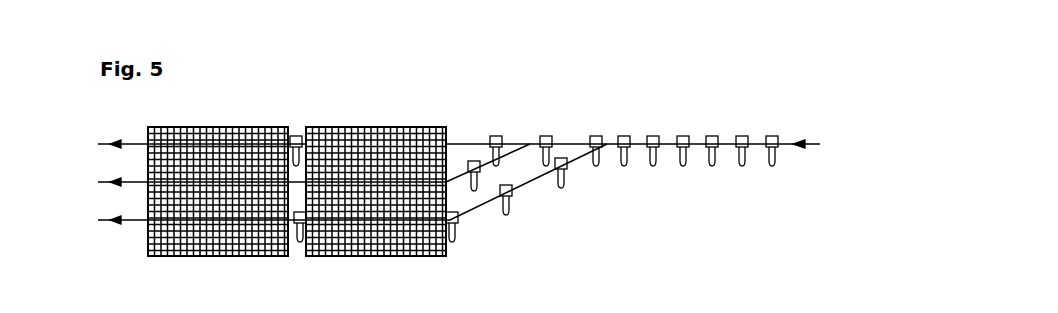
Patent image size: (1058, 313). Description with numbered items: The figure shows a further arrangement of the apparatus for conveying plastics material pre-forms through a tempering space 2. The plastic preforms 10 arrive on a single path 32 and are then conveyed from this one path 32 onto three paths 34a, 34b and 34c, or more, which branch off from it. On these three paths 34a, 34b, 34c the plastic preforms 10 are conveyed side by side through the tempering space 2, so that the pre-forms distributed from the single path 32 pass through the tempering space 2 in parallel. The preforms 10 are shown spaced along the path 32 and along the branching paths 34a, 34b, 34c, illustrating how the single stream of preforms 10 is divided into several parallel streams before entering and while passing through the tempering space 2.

The tempering space 2 is at (355, 148).
The plastic preforms 10 is at (203, 135).
The path 32 is at (727, 144).
The path 34a is at (120, 143).
The path 34b is at (120, 181).
The path 34c is at (125, 218).